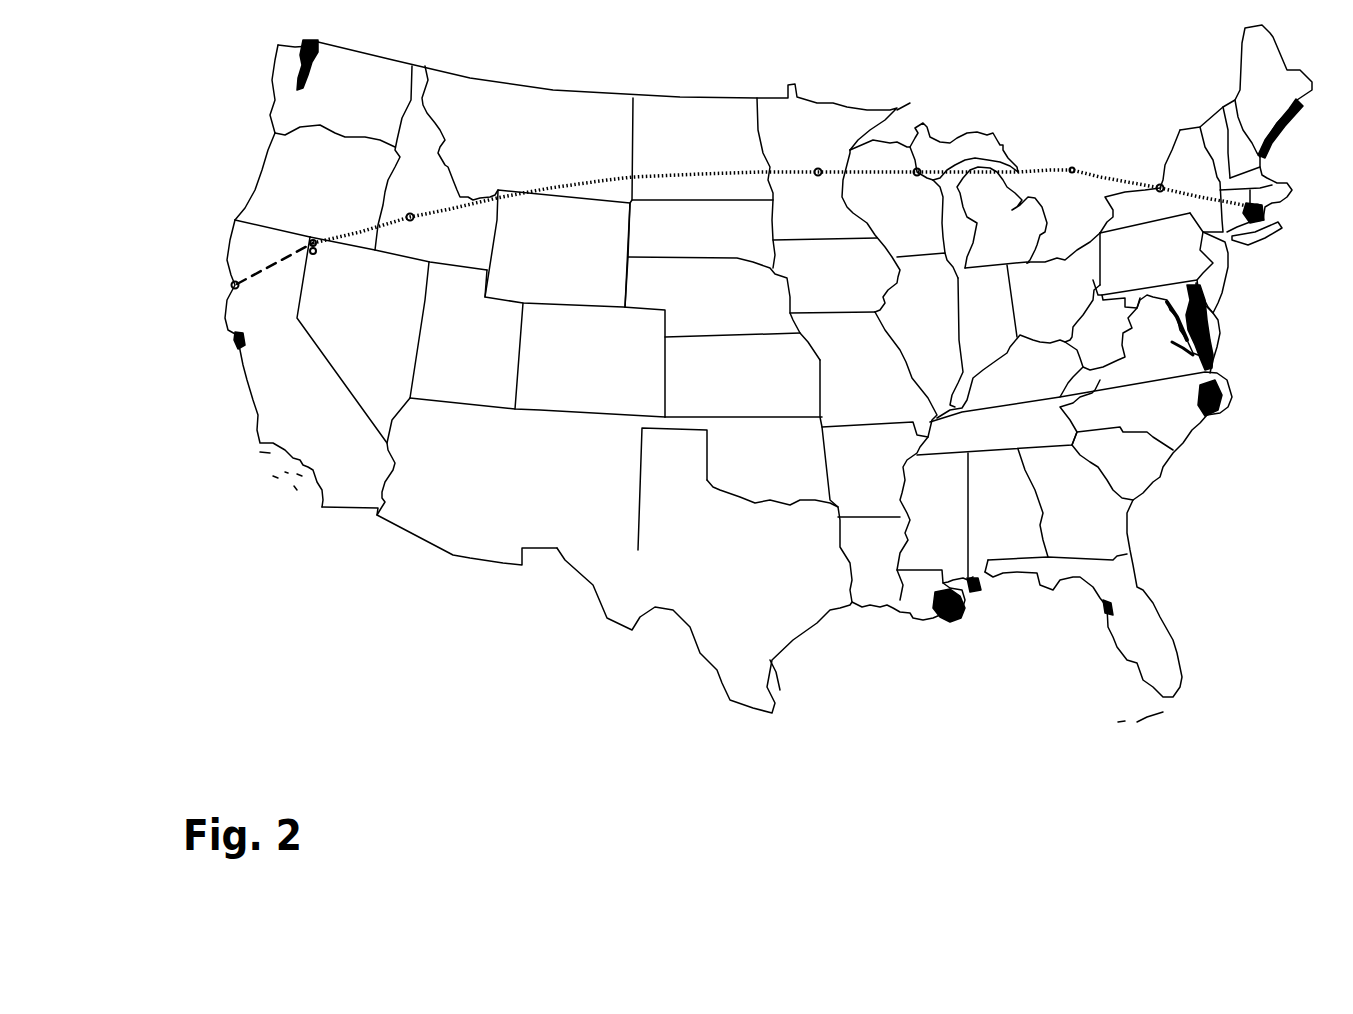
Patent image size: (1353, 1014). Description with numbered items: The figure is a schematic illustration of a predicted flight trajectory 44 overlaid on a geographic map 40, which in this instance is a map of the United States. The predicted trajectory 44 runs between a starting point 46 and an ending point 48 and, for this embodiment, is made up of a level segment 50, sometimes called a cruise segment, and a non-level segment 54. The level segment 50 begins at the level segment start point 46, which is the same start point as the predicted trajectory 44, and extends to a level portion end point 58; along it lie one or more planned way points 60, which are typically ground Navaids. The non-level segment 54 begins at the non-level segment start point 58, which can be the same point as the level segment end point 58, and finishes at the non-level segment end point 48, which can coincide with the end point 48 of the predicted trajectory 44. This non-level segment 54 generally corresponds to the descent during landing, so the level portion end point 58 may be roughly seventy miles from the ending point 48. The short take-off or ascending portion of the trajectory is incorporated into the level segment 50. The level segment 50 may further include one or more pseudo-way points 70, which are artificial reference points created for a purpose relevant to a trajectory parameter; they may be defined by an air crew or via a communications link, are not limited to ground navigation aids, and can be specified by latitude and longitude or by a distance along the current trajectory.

The geographic map 40 is at (1200, 433).
The predicted flight trajectory 44 is at (607, 172).
The starting point 46 is at (1260, 212).
The ending point 48 is at (232, 283).
The level segment 50 is at (1072, 165).
The non-level segment 54 is at (265, 252).
The level portion end point 58 is at (310, 240).
The planned way points 60 is at (818, 170).
The pseudo-way points 70 is at (410, 214).